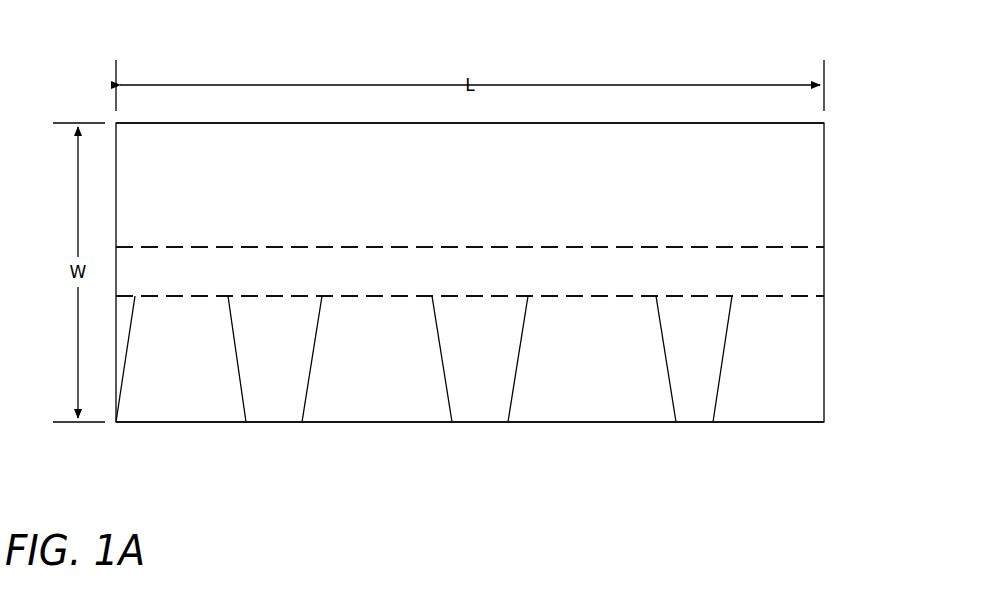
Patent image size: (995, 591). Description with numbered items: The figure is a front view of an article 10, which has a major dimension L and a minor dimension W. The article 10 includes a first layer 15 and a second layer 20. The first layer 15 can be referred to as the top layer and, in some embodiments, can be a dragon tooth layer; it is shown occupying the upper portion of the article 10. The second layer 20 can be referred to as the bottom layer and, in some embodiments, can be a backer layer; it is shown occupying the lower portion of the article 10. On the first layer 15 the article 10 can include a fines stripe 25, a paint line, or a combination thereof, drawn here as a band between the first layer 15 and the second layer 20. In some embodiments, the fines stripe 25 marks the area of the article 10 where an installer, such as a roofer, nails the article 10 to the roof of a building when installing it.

The article 10 is at (147, 38).
The first layer 15 is at (787, 178).
The fines stripe 25 is at (806, 272).
The second layer 20 is at (806, 347).